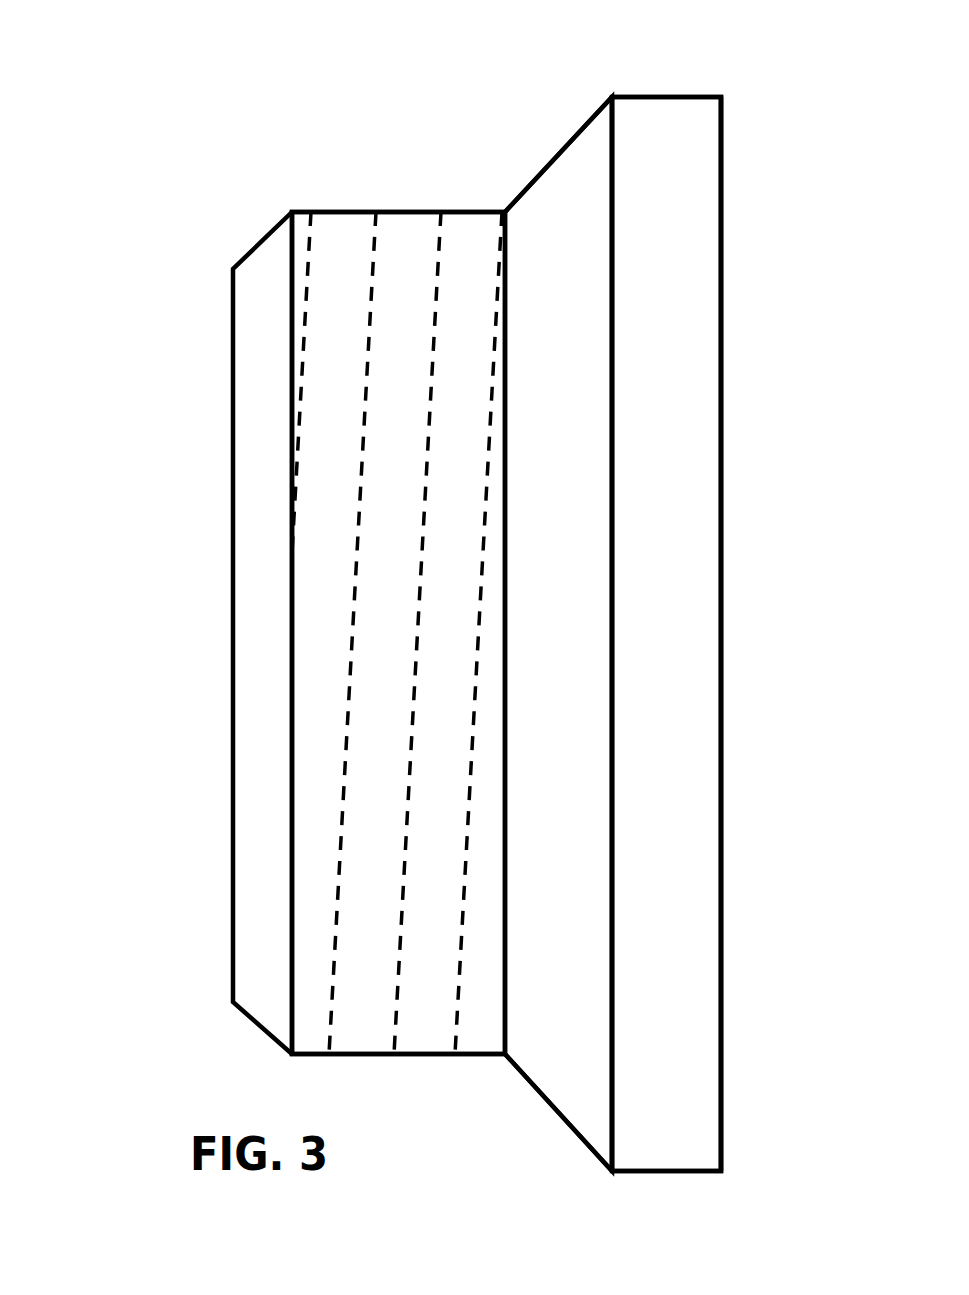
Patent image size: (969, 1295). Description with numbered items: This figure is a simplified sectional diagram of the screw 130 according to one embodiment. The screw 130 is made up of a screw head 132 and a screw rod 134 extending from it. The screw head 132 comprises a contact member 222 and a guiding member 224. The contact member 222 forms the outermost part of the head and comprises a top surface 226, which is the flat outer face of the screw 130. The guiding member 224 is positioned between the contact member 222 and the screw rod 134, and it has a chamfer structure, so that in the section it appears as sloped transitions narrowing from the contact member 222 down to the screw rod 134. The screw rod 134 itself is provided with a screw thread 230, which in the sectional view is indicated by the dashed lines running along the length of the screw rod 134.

The screw 130 is at (193, 68).
The screw head 132 is at (722, 87).
The screw rod 134 is at (341, 240).
The contact member 222 is at (637, 538).
The guiding member 224 is at (587, 538).
The top surface 226 is at (725, 373).
The screw thread 230 is at (352, 660).